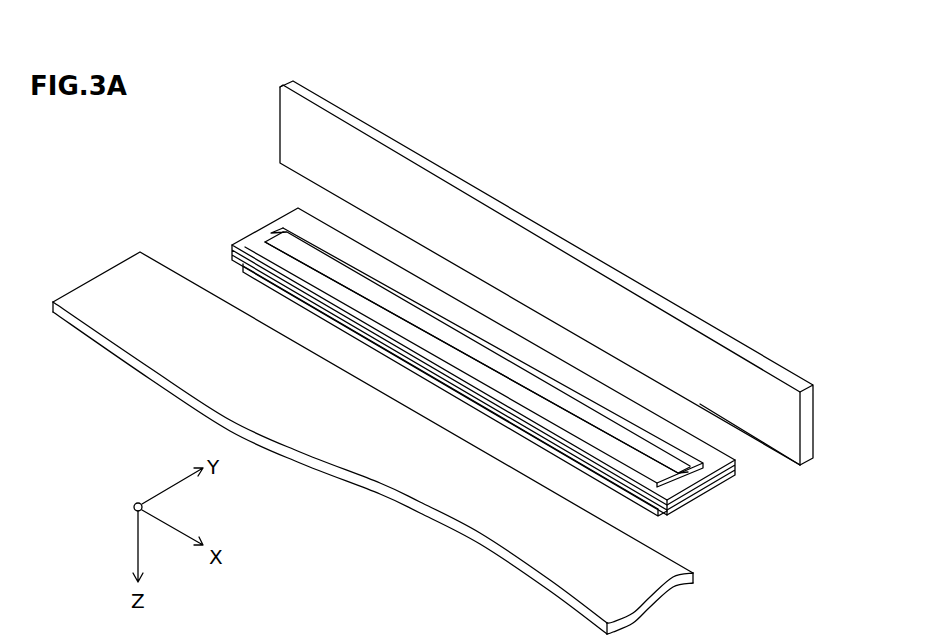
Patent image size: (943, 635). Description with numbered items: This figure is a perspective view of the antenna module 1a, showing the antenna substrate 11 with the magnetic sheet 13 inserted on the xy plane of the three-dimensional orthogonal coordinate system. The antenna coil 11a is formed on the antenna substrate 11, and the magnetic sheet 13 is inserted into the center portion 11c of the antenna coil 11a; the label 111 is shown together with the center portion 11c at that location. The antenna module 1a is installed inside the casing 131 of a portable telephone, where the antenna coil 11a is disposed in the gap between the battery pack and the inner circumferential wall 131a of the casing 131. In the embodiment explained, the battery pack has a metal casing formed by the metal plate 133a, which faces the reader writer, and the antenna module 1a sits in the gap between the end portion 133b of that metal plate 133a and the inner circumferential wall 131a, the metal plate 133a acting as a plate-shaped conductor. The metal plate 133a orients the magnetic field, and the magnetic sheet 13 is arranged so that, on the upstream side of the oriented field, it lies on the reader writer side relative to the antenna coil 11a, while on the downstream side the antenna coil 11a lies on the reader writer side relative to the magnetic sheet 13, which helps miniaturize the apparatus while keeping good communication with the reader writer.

The antenna module 1a is at (623, 136).
The antenna substrate 11 is at (293, 303).
The antenna coil 11a is at (327, 238).
The center portion 11c is at (471, 314).
The electrode 111 is at (484, 358).
The magnetic sheet 13 is at (270, 250).
The casing 131 is at (700, 362).
The inner circumferential wall 131a is at (777, 455).
The metal plate 133a is at (512, 515).
The end portion 133b is at (697, 558).